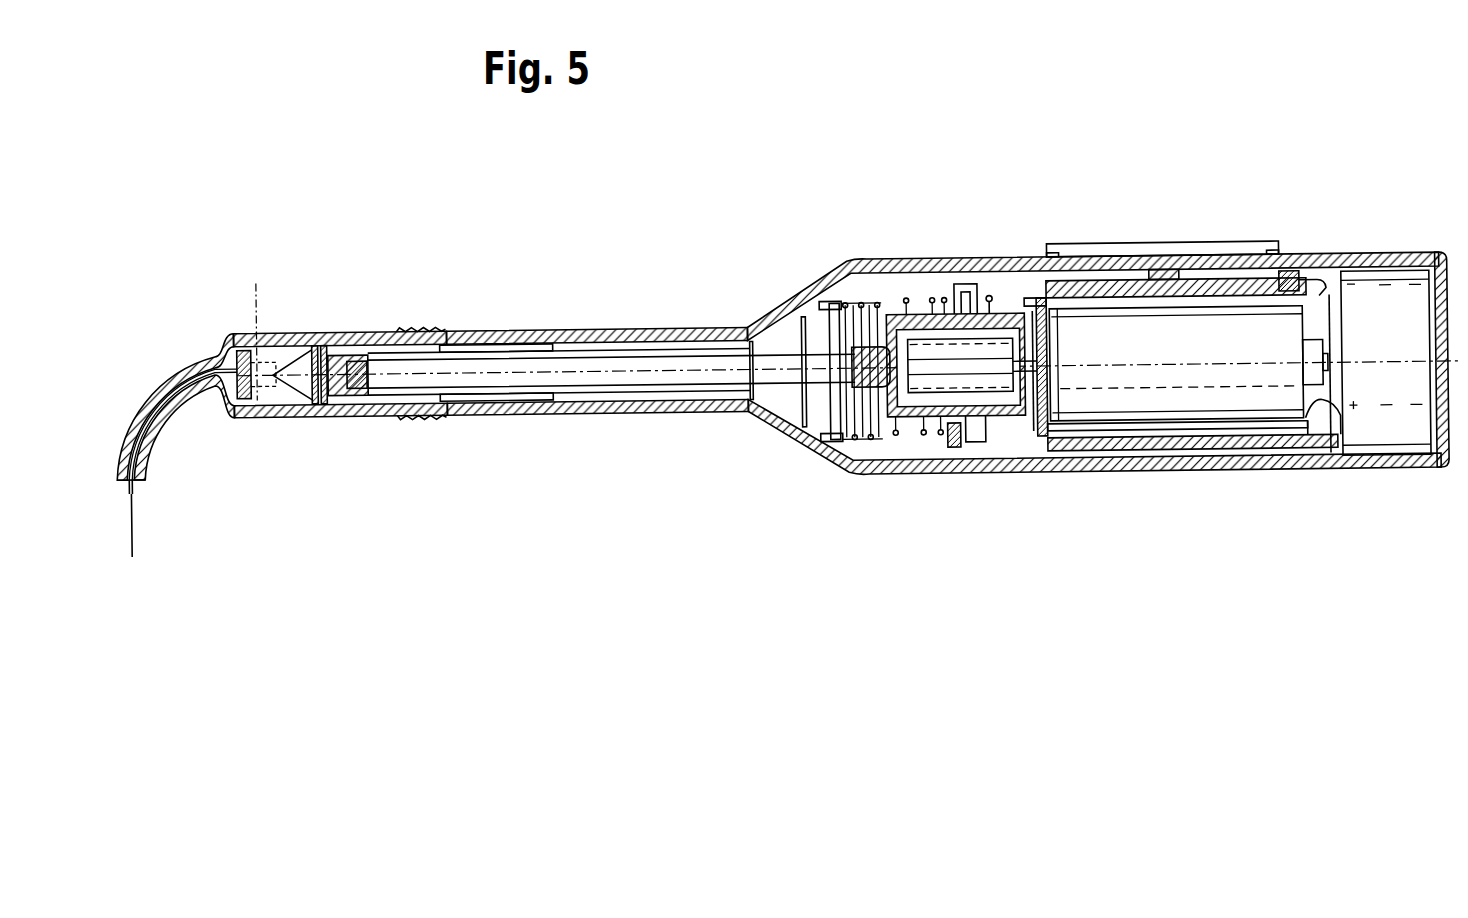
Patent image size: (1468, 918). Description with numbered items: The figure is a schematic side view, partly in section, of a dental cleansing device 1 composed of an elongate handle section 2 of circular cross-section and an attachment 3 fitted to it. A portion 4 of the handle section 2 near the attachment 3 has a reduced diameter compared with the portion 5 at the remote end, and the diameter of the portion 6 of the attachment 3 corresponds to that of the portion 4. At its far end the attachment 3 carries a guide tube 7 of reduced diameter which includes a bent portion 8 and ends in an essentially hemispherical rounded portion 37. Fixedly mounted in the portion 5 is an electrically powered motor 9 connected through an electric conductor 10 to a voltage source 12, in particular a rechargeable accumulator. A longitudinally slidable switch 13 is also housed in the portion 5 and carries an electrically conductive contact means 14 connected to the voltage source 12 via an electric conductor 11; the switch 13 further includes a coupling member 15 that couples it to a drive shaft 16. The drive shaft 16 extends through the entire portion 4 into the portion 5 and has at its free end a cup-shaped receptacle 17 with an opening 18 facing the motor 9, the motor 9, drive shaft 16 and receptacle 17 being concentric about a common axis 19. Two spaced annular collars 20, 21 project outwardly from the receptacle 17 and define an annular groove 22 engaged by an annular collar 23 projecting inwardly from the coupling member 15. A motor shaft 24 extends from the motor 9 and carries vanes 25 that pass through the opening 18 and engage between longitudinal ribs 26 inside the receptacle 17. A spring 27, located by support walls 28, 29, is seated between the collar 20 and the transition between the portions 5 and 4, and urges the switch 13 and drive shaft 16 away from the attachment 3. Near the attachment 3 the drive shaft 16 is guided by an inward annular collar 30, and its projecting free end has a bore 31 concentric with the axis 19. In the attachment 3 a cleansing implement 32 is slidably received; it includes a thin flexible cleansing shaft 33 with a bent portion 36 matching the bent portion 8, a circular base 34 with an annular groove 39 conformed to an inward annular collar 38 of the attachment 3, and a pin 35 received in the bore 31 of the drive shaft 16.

The dental cleansing device 1 is at (707, 180).
The handle section 2 is at (797, 463).
The attachment 3 is at (270, 450).
The portion of reduced diameter 4 is at (535, 418).
The portion of larger diameter 5 is at (1236, 482).
The portion of the attachment 6 is at (251, 420).
The guide tube 7 is at (171, 376).
The bent portion 8 is at (191, 453).
The electrically powered motor 9 is at (1170, 405).
The electric conductor 10 is at (1318, 420).
The electric conductor 11 is at (1325, 285).
The voltage source 12 is at (1400, 442).
The longitudinally slidable switch 13 is at (1230, 255).
The electrically conductive contact means 14 is at (1303, 292).
The coupling member 15 is at (1088, 297).
The drive shaft 16 is at (557, 362).
The cup-shaped receptacle 17 is at (915, 426).
The opening 18 is at (1046, 447).
The common axis 19 is at (656, 376).
The annular collar 20 is at (955, 317).
The annular collar 21 is at (991, 304).
The annular groove 22 is at (972, 452).
The annular collar 23 is at (975, 300).
The motor shaft 24 is at (1003, 366).
The vanes 25 is at (1013, 320).
The longitudinal ribs 26 is at (867, 448).
The spring 27 is at (878, 308).
The support wall 28 is at (830, 309).
The support wall 29 is at (932, 308).
The annular collar 30 is at (350, 349).
The bore 31 is at (365, 398).
The cleansing implement 32 is at (268, 356).
The cleansing shaft 33 is at (140, 548).
The circular base 34 is at (300, 402).
The pin 35 is at (336, 398).
The bent portion 36 is at (183, 408).
The hemispherical rounded portion 37 is at (150, 481).
The annular collar 38 is at (333, 349).
The annular groove 39 is at (292, 357).